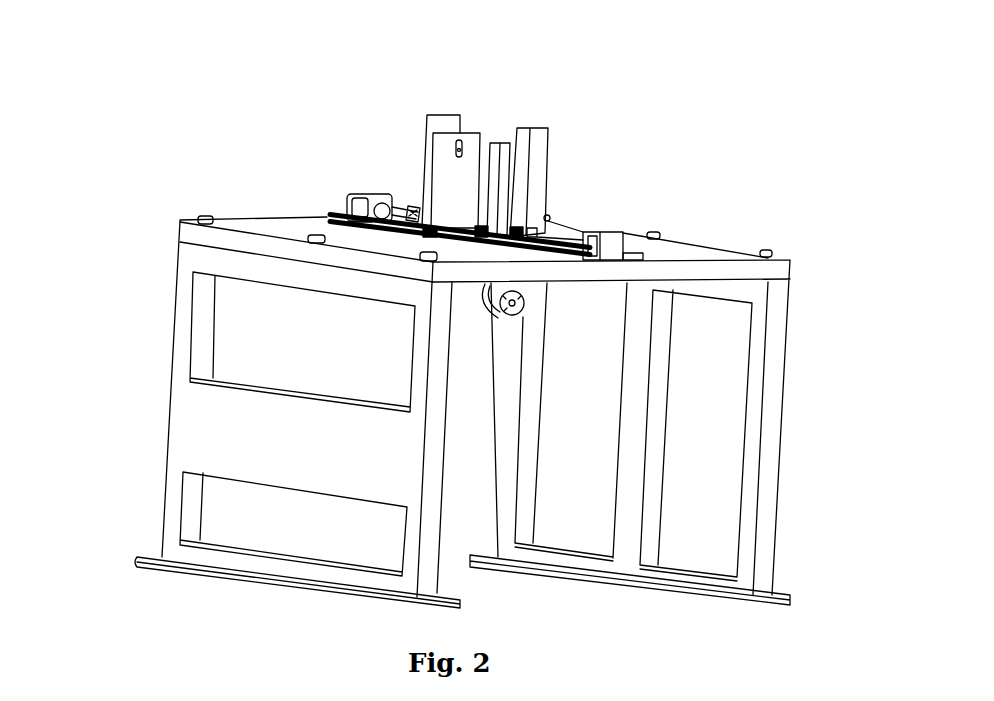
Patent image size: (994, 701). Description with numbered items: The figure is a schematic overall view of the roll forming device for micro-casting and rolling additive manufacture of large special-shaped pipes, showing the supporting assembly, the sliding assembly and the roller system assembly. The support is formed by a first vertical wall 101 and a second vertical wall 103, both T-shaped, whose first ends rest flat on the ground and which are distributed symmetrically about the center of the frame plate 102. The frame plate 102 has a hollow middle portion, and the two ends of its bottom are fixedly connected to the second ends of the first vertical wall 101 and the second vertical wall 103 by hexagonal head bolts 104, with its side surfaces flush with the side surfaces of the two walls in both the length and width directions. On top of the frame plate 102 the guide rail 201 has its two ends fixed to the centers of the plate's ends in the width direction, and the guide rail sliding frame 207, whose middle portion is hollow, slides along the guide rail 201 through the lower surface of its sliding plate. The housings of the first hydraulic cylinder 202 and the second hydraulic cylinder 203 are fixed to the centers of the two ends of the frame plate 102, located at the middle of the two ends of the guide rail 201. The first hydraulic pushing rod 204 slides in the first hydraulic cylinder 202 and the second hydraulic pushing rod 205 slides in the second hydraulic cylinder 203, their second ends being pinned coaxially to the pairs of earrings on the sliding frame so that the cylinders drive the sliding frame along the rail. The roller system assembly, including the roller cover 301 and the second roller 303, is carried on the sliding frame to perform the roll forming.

The first vertical wall 101 is at (173, 550).
The frame plate 102 is at (208, 238).
The second vertical wall 103 is at (762, 575).
The hexagonal head bolt 104 is at (770, 250).
The guide rail 201 is at (337, 217).
The first hydraulic cylinder 202 is at (618, 241).
The second hydraulic cylinder 203 is at (373, 194).
The first hydraulic pushing rod 204 is at (598, 249).
The second hydraulic pushing rod 205 is at (370, 222).
The guide rail sliding frame 207 is at (535, 178).
The roller cover 301 is at (455, 180).
The second roller 303 is at (457, 312).